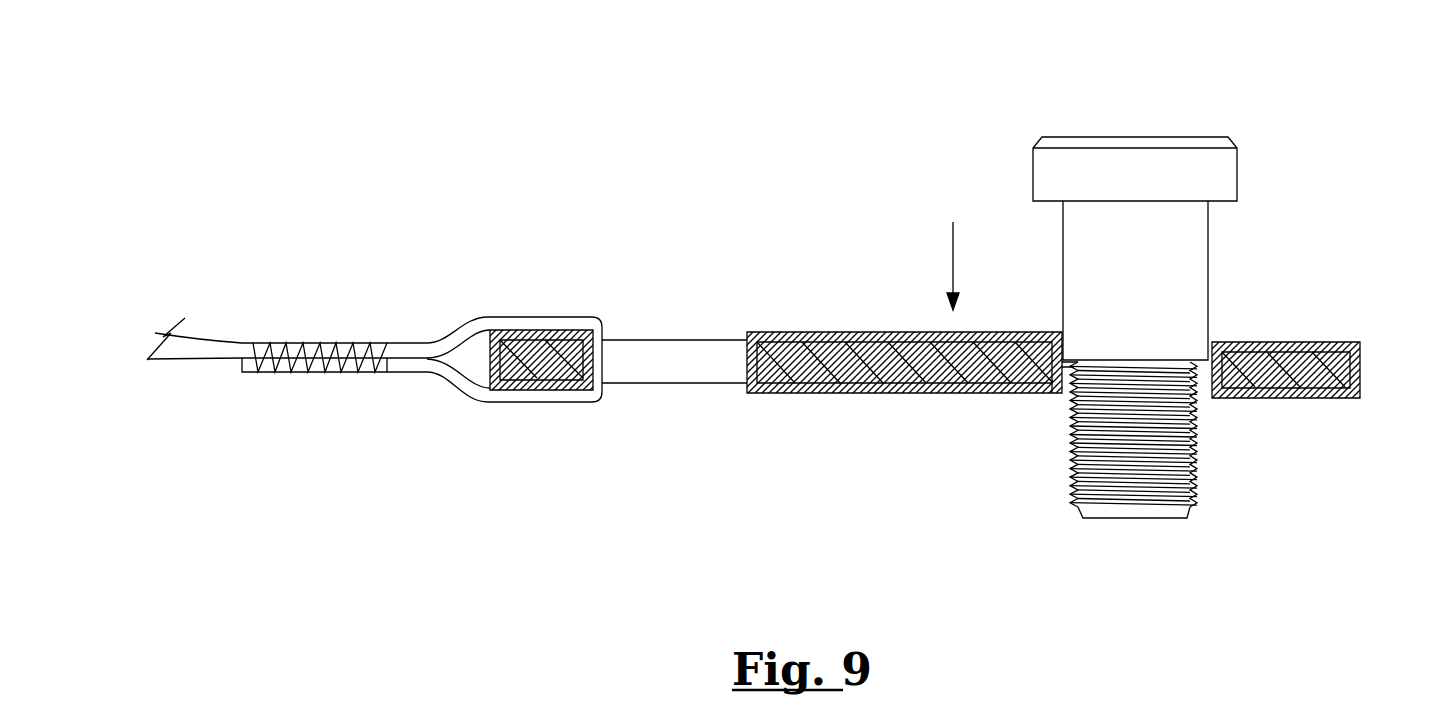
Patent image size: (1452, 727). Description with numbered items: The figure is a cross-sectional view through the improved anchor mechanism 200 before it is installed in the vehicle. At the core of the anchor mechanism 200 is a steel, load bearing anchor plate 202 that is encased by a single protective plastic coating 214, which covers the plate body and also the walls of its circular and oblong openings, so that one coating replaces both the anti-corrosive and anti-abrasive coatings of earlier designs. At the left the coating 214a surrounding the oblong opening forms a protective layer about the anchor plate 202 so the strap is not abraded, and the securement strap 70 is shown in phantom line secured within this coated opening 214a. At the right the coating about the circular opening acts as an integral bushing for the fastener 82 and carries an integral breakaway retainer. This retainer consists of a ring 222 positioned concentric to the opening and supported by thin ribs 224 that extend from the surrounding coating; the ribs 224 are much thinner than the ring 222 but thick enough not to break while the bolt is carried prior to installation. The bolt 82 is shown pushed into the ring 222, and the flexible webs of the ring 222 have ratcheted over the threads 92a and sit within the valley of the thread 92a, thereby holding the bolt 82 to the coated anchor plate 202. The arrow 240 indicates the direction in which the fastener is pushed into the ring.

The anchor mechanism 200 is at (865, 115).
The securement strap 70 is at (216, 343).
The coating about the oblong opening 214a is at (593, 365).
The protective plastic coating 214 is at (818, 333).
The anchor plate 202 is at (910, 360).
The fastener 82 is at (1215, 177).
The threads 92a is at (1202, 457).
The ring 222 is at (1067, 360).
The ribs 224 is at (1062, 373).
The force direction arrow 240 is at (953, 272).